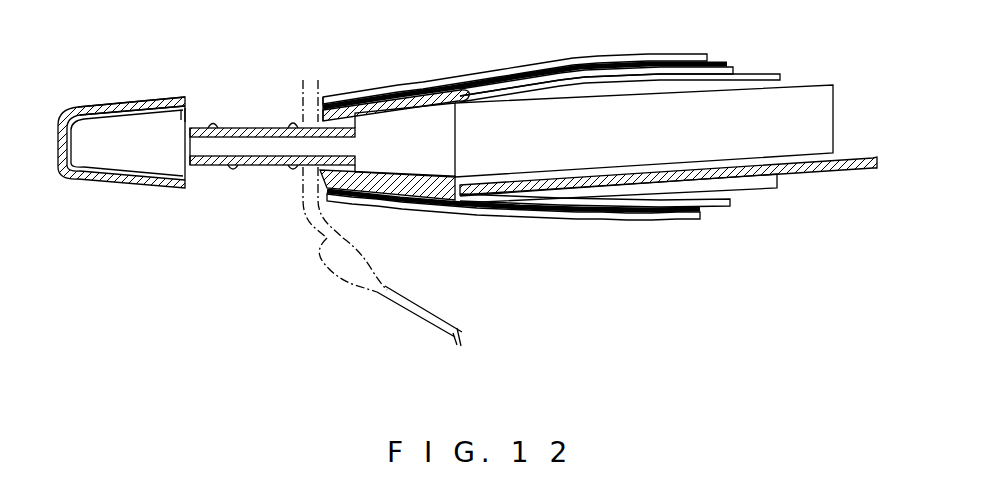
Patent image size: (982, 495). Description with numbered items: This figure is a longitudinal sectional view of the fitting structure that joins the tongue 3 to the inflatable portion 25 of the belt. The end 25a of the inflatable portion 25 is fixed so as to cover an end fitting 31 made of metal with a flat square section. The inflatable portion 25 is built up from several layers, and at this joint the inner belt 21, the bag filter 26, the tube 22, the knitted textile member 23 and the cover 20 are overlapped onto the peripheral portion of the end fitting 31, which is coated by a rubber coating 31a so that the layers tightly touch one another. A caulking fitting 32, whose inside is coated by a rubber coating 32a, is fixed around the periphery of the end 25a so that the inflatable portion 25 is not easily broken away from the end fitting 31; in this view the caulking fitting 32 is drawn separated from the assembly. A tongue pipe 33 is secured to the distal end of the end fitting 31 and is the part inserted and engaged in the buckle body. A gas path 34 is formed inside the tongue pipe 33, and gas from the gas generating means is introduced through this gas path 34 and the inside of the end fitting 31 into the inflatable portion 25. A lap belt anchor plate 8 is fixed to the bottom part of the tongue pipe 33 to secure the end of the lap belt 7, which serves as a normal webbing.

The tongue 3 is at (350, 87).
The lap belt 7 is at (417, 313).
The lap belt anchor plate 8 is at (303, 227).
The cover 20 is at (700, 53).
The inner belt 21 is at (862, 162).
The tube 22 is at (760, 78).
The knitted textile member 23 is at (725, 65).
The inflatable portion 25 is at (578, 57).
The end of the inflatable portion 25a is at (410, 203).
The bag filter 26 is at (820, 84).
The end fitting 31 is at (430, 127).
The rubber coating 31a is at (470, 87).
The caulking fitting 32 is at (157, 99).
The rubber coating 32a is at (183, 118).
The tongue pipe 33 is at (252, 165).
The gas path 34 is at (222, 162).